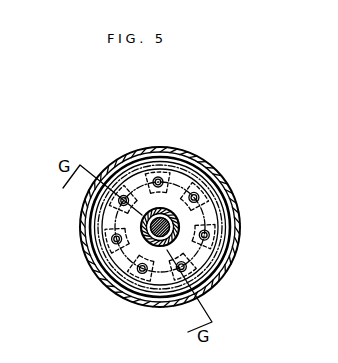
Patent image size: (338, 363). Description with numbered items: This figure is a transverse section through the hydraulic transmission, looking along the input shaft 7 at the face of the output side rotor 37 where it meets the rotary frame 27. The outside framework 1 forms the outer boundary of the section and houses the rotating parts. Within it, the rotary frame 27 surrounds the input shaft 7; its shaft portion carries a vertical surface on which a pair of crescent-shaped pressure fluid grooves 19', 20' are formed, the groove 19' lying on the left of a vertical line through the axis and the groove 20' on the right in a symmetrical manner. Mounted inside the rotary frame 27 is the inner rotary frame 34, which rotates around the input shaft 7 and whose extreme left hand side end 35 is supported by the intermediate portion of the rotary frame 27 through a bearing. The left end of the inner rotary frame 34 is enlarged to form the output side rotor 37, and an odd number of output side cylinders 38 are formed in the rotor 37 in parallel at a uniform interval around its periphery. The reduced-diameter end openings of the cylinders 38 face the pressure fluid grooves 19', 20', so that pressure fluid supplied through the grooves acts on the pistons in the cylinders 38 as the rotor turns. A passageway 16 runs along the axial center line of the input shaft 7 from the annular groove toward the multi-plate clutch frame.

The outside framework 1 is at (195, 153).
The input shaft 7 is at (162, 247).
The passageway 16 is at (142, 233).
The crescent-shaped pressure fluid groove 19' is at (181, 205).
The crescent-shaped pressure fluid groove 20' is at (146, 255).
The rotary frame 27 is at (233, 188).
The inner rotary frame 34 is at (179, 217).
The extreme left hand side end 35 is at (176, 240).
The output side rotor 37 is at (178, 150).
The output side cylinders 38 is at (141, 150).